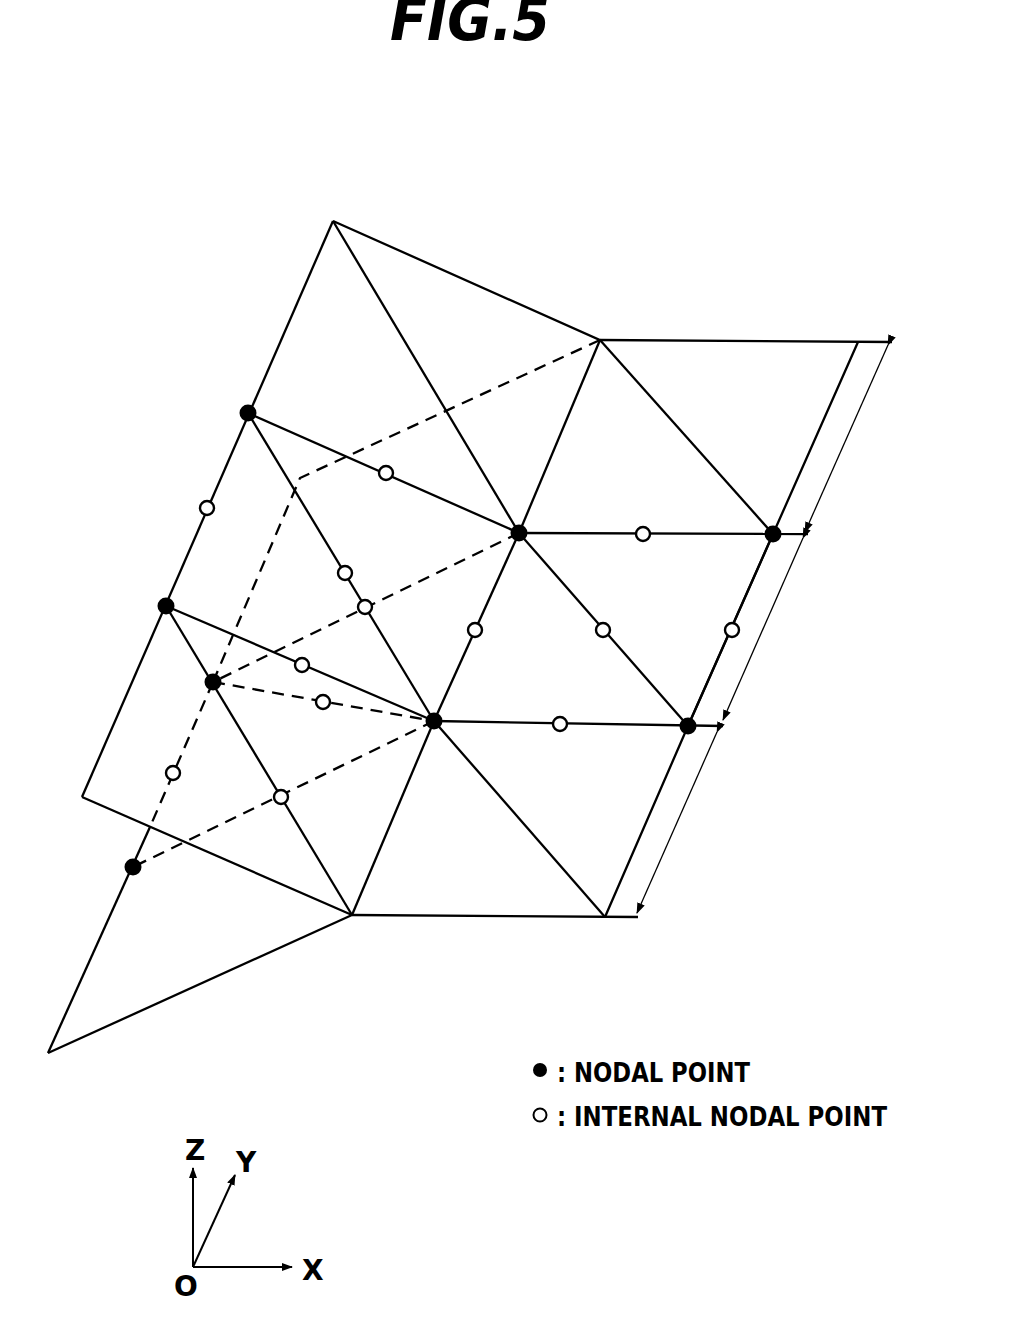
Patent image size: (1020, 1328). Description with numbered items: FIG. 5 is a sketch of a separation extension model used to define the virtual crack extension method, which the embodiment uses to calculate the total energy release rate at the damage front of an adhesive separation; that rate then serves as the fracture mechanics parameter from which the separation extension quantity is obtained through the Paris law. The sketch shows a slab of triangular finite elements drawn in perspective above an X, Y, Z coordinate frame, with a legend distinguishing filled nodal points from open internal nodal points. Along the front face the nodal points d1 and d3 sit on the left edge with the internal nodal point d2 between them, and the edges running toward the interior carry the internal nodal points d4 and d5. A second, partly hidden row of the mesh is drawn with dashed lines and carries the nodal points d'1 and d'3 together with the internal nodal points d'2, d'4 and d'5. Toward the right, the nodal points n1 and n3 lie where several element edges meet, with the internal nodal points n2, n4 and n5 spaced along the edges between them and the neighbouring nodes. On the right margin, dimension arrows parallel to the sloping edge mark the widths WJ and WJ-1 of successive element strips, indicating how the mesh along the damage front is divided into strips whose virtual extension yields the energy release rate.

The nodal point d1 is at (149, 591).
The internal nodal point d2 is at (191, 493).
The nodal point d3 is at (234, 398).
The internal nodal point d4 is at (287, 682).
The internal nodal point d5 is at (405, 459).
The nodal point d'1 is at (114, 874).
The internal nodal point d'2 is at (154, 772).
The nodal point d'3 is at (194, 687).
The internal nodal point d'4 is at (259, 791).
The internal nodal point d'5 is at (380, 586).
The nodal point n1 is at (412, 703).
The internal nodal point n2 is at (460, 614).
The nodal point n3 is at (496, 508).
The internal nodal point n4 is at (589, 708).
The internal nodal point n5 is at (650, 518).
The width of segment J WJ is at (765, 629).
The width of segment J-1 WJ-1 is at (689, 822).